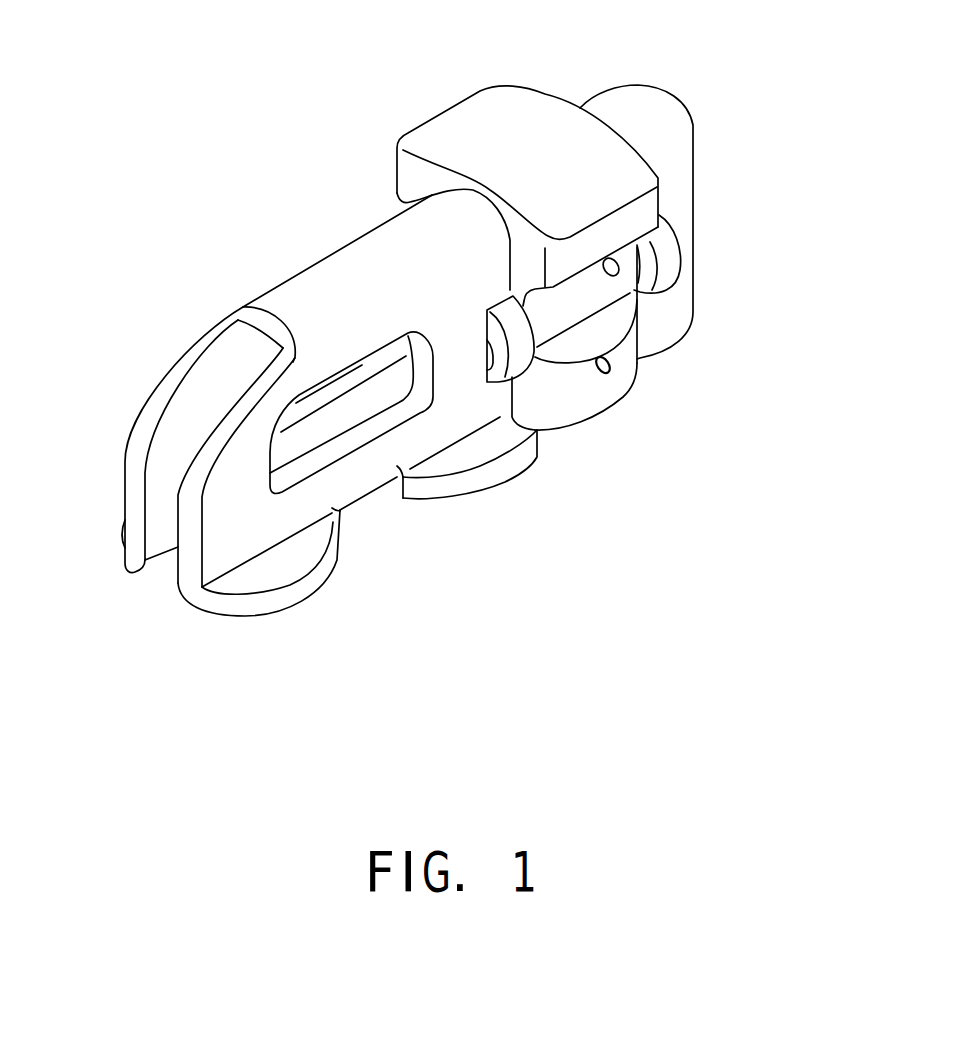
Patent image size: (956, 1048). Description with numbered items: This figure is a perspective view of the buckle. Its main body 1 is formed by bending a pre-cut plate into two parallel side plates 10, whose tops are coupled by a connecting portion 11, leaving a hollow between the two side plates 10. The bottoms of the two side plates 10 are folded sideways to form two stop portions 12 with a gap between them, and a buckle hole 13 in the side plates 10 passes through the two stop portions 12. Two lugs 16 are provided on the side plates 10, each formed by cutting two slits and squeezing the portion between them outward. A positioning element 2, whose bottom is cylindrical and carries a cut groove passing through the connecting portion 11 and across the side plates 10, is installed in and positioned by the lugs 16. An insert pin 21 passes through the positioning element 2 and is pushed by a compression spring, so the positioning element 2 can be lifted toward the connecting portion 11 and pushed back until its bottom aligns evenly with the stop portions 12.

The main body 1 is at (406, 333).
The positioning element 2 is at (501, 100).
The side plates 10 is at (135, 501).
The connecting portion 11 is at (348, 254).
The stop portions 12 is at (510, 493).
The buckle hole 13 is at (361, 458).
The lugs 16 is at (669, 250).
The insert pin 21 is at (611, 366).